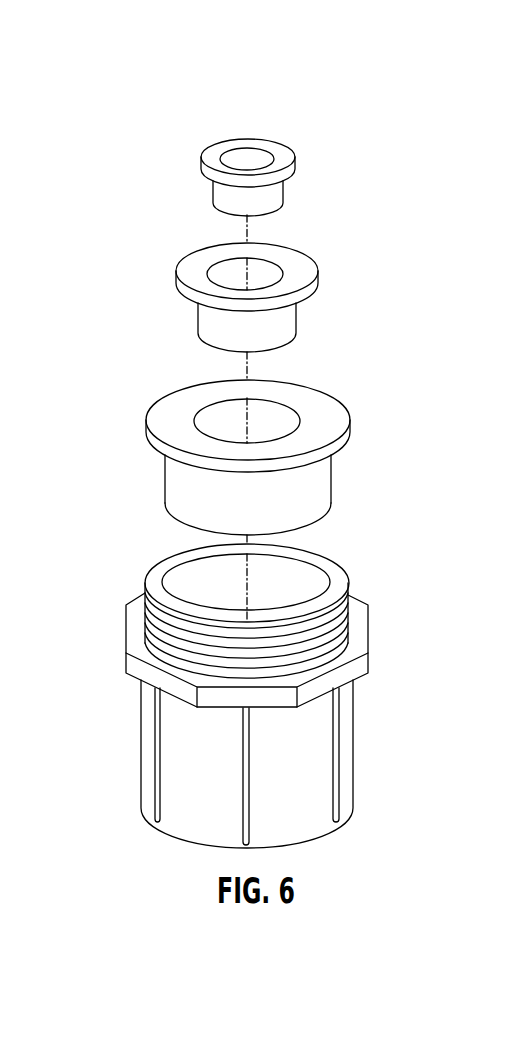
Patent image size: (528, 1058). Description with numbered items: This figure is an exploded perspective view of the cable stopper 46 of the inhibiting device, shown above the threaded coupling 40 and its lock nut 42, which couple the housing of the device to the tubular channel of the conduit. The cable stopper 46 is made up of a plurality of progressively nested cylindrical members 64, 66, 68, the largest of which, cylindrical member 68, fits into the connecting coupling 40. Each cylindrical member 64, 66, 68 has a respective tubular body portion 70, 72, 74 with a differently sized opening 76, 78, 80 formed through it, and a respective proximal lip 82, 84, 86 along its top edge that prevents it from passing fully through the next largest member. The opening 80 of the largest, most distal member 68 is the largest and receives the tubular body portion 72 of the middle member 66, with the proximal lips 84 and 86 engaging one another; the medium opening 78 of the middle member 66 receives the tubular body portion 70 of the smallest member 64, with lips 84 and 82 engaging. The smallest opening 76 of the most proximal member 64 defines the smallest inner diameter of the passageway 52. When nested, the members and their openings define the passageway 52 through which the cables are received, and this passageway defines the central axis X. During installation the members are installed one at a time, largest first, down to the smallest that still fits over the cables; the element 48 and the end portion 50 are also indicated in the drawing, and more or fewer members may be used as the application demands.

The threaded coupling 40 is at (238, 696).
The lock nut 42 is at (127, 633).
The cable stopper 46 is at (122, 105).
The first seal member 48 is at (240, 149).
The lower end of third seal member 50 is at (320, 517).
The passageway 52 is at (248, 161).
The cylindrical member 64 is at (276, 160).
The cylindrical member 66 is at (269, 290).
The cylindrical member 68 is at (258, 459).
The tubular body portion 70 is at (218, 195).
The tubular body portion 72 is at (205, 320).
The tubular body portion 74 is at (248, 503).
The opening 76 is at (233, 150).
The opening 78 is at (282, 267).
The opening 80 is at (288, 405).
The proximal lip 82 is at (205, 175).
The proximal lip 84 is at (180, 293).
The proximal lip 86 is at (148, 440).
The central axis X is at (250, 601).